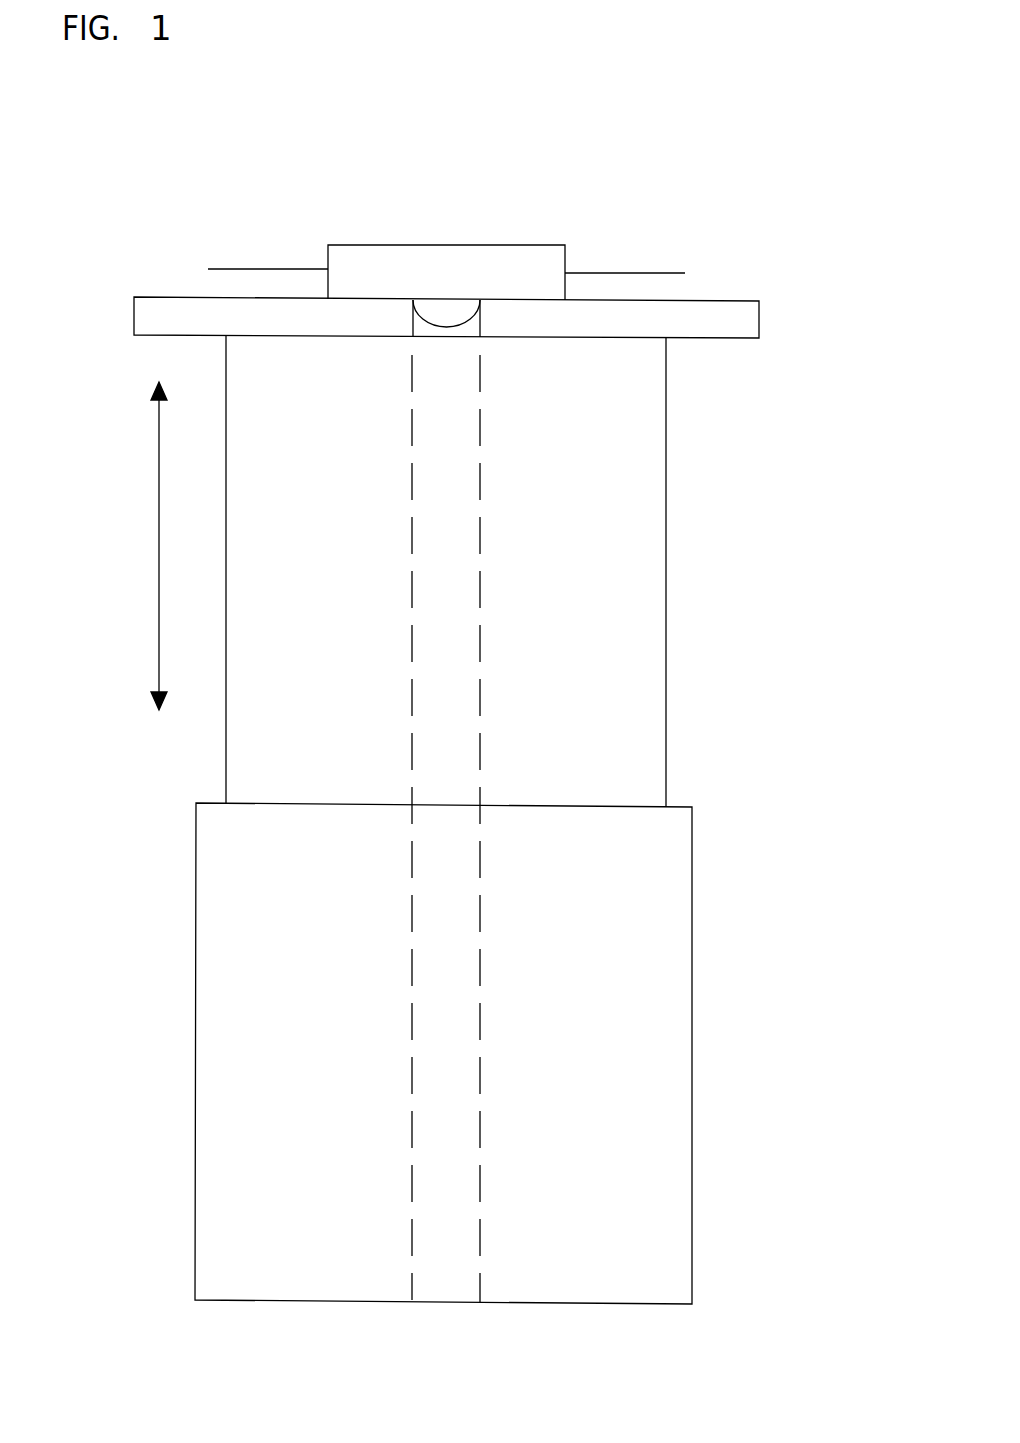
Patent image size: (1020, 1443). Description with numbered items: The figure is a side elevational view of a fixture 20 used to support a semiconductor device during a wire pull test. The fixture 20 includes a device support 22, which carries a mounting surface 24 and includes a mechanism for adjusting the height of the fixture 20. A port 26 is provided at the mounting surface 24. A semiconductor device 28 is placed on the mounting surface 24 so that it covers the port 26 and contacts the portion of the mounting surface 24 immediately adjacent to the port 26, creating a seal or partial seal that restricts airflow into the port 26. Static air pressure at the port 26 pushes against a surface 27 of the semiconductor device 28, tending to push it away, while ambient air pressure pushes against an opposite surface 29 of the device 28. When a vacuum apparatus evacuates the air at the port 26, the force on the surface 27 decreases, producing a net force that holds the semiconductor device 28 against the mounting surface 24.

The fixture 20 is at (189, 750).
The device support 22 is at (665, 657).
The mounting surface 24 is at (760, 320).
The port 26 is at (446, 316).
The surface of the semiconductor device 27 is at (508, 300).
The semiconductor device 28 is at (437, 230).
The surface of the device 29 is at (469, 245).